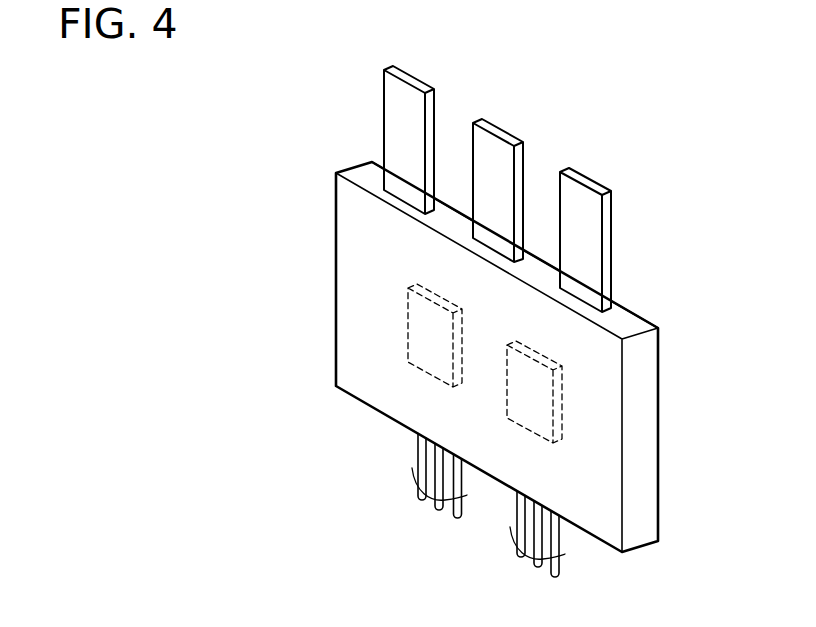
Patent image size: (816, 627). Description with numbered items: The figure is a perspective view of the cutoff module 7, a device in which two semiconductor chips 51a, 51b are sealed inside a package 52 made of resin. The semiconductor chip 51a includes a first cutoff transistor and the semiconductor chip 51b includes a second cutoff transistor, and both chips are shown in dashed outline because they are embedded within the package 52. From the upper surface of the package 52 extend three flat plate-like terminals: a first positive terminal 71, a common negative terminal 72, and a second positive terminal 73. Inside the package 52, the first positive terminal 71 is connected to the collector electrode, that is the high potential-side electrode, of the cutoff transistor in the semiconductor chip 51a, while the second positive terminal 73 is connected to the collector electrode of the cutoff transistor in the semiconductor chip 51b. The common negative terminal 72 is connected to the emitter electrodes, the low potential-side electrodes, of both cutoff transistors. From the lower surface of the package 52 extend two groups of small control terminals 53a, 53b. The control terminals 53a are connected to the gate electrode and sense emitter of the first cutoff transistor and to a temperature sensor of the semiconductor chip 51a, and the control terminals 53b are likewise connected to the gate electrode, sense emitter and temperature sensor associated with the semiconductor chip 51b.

The cutoff module 7 is at (328, 106).
The package 52 is at (638, 390).
The first positive terminal 71 is at (412, 75).
The common negative terminal 72 is at (498, 125).
The second positive terminal 73 is at (588, 178).
The semiconductor chip 51a is at (425, 333).
The semiconductor chip 51b is at (532, 400).
The control terminals 53a is at (413, 475).
The control terminals 53b is at (510, 530).